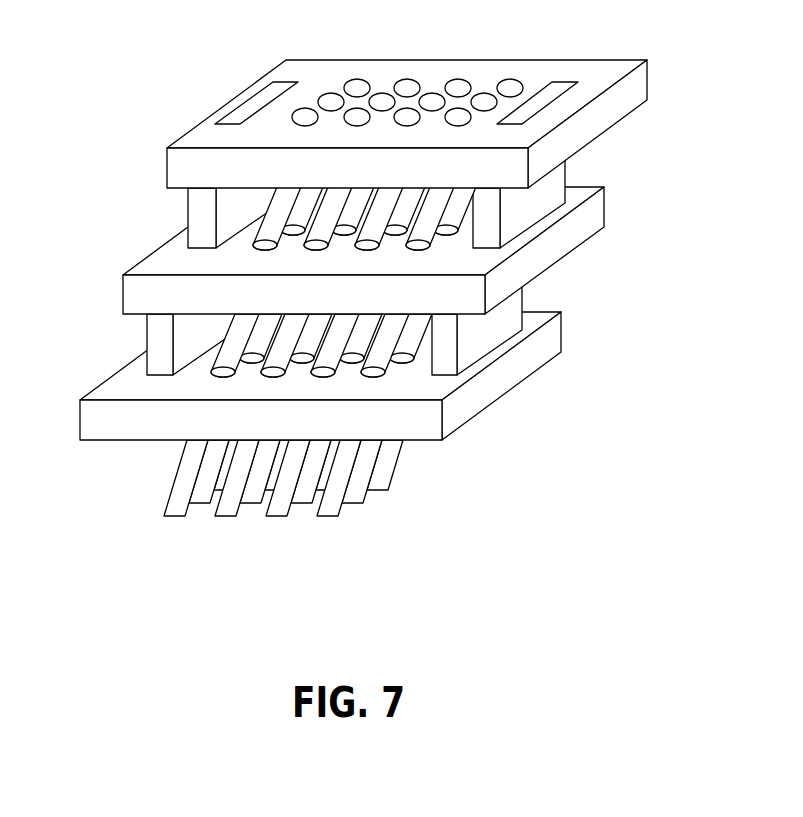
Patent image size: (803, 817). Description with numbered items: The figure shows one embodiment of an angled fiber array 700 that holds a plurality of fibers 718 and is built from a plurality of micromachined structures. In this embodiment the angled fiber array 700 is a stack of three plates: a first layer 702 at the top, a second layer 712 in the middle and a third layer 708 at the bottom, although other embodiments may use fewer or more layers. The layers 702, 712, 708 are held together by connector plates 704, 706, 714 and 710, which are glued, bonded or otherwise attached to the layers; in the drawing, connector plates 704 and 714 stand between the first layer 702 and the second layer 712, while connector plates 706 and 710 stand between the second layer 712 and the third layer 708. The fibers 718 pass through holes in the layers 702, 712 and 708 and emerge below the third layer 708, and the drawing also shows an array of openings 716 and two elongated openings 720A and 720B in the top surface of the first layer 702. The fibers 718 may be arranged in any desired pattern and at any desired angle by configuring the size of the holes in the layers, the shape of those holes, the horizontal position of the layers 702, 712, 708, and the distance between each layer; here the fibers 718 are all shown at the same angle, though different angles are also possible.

The angled fiber array 700 is at (375, 311).
The first layer 702 is at (356, 94).
The connector plate 704 is at (187, 207).
The connector plate 706 is at (147, 330).
The third layer 708 is at (492, 377).
The connector plate 710 is at (493, 318).
The second layer 712 is at (577, 217).
The connector plate 714 is at (533, 197).
The contact holes 716 is at (360, 79).
The fibers 718 is at (229, 500).
The first slot 720A is at (248, 100).
The second slot 720B is at (563, 80).